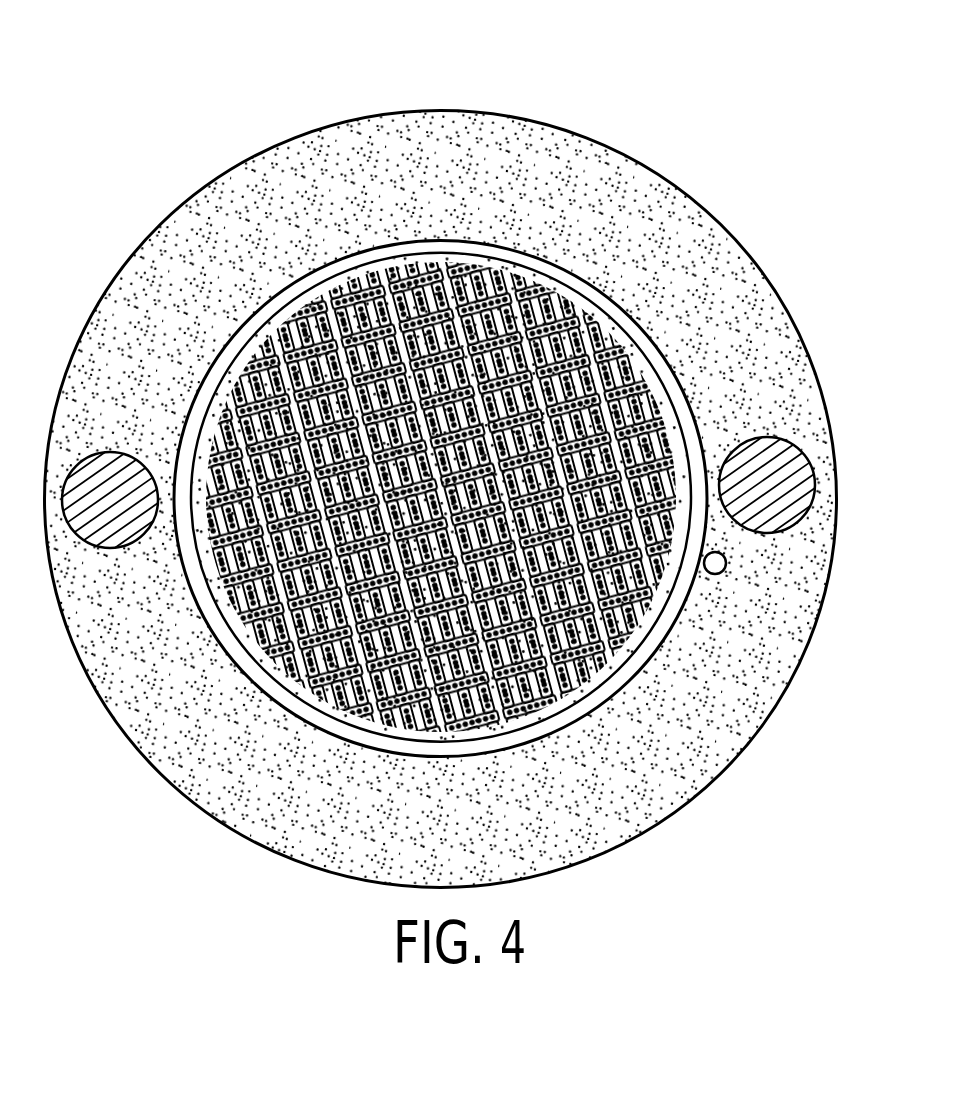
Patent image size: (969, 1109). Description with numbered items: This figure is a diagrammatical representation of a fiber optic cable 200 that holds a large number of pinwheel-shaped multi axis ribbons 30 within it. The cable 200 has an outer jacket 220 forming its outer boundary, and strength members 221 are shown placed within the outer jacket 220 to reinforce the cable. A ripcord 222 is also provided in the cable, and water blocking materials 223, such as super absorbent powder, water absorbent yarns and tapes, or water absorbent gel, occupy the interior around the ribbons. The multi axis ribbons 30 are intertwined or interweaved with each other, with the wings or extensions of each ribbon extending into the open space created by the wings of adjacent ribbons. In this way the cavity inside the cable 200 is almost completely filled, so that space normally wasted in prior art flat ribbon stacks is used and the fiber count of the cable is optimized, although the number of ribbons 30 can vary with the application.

The fiber optic cable 200 is at (525, 101).
The outer jacket 220 is at (394, 110).
The multi axis ribbons 30 is at (578, 302).
The strength members 221 is at (815, 478).
The ripcord 222 is at (727, 563).
The water blocking materials 223 is at (627, 650).